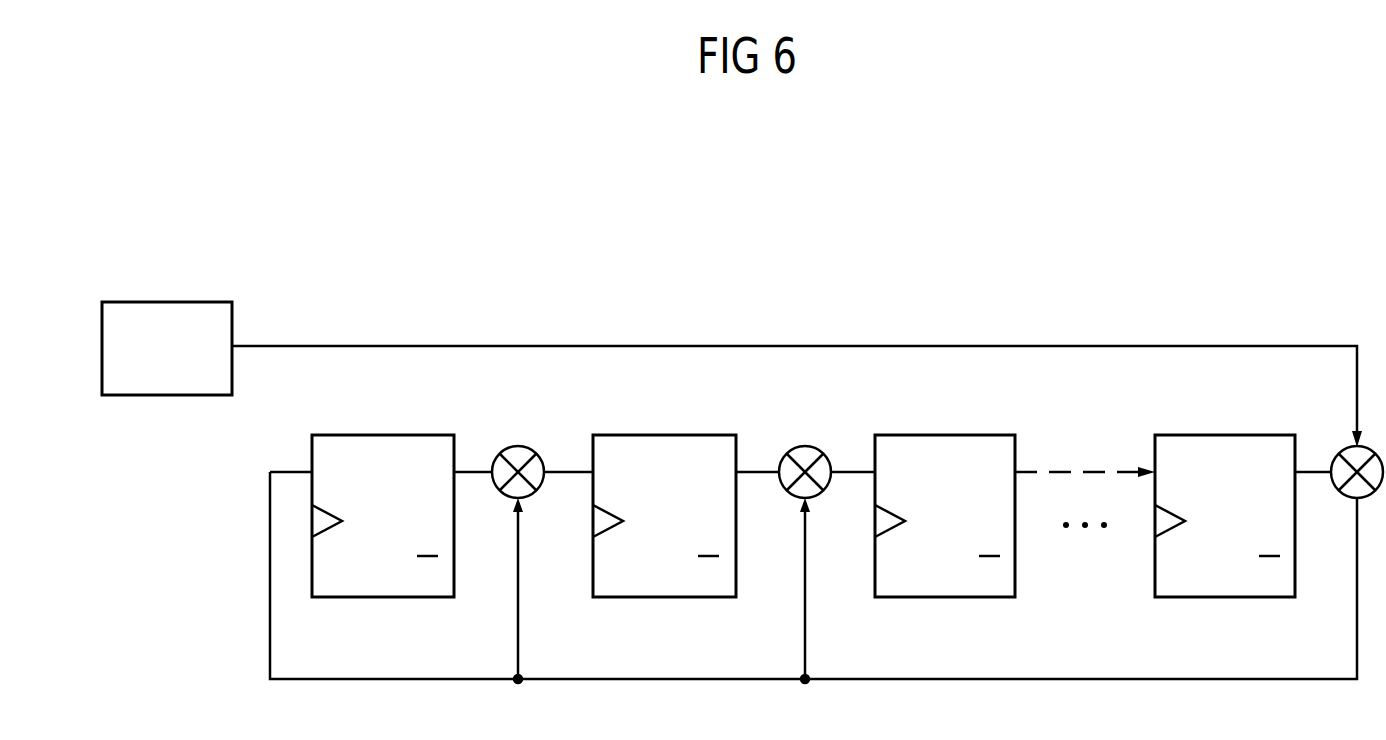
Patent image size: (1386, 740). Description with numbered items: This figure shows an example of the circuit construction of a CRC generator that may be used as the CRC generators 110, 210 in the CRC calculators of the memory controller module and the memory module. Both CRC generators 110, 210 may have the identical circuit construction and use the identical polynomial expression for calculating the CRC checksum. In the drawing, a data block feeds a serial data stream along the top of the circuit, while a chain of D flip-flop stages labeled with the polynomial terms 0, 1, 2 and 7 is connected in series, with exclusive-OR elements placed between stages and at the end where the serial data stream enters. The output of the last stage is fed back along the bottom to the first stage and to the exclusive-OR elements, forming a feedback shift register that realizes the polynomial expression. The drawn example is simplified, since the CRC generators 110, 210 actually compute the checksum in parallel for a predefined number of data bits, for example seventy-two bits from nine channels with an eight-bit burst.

The CRC generator 110 is at (742, 426).
The CRC generator 210 is at (552, 268).
The flip-flop stage x^ 0 is at (383, 544).
The flip-flop stage x^ 1 is at (664, 544).
The flip-flop stage x^ 2 is at (945, 544).
The flip-flop stage x^ 7 is at (1225, 544).